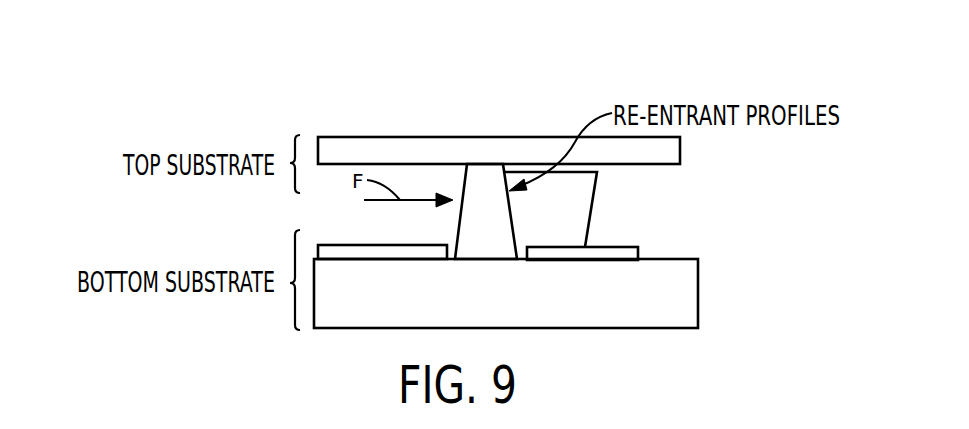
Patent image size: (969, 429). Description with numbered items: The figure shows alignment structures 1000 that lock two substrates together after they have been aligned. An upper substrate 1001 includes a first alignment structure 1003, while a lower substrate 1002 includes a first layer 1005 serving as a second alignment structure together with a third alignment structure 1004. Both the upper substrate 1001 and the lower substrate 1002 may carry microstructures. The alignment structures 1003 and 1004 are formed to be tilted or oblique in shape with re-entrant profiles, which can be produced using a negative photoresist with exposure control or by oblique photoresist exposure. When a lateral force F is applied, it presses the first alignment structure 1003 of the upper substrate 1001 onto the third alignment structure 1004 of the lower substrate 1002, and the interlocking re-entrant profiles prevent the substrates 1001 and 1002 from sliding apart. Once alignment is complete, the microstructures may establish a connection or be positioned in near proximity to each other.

The MEMS device / re-entrant profile structure 1000 is at (535, 104).
The upper substrate 1001 is at (410, 136).
The lower substrate 1002 is at (698, 294).
The first alignment structure 1003 is at (486, 170).
The third alignment structure 1004 is at (592, 213).
The first layer 1005 is at (350, 243).